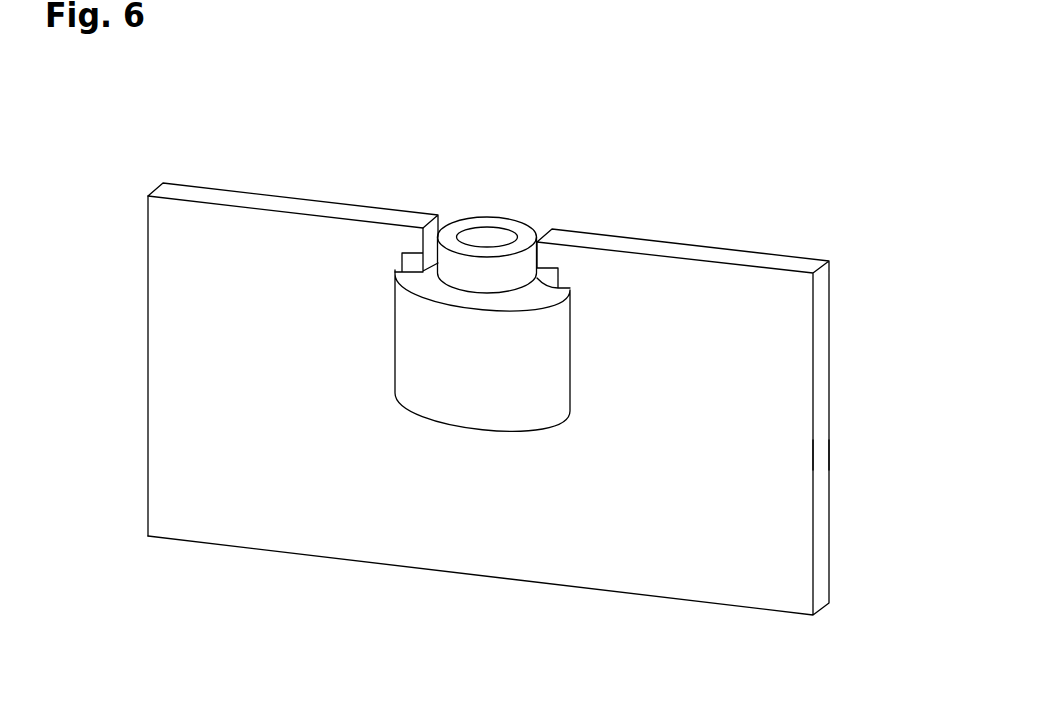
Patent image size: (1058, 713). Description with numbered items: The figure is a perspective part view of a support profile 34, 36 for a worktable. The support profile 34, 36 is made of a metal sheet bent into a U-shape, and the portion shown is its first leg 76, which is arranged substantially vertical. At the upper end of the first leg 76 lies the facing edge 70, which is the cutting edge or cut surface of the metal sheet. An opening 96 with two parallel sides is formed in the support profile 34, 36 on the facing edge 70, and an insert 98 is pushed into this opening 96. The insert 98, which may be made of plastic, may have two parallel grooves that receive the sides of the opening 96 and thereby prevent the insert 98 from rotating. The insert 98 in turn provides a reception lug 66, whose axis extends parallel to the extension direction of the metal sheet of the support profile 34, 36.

The opening 96 is at (447, 188).
The reception lug 66 is at (510, 202).
The insert 98 is at (543, 342).
The facing edge 70 is at (792, 262).
The first leg 76 is at (170, 370).
The support profile 34 is at (874, 456).
The support profile 36 is at (795, 452).